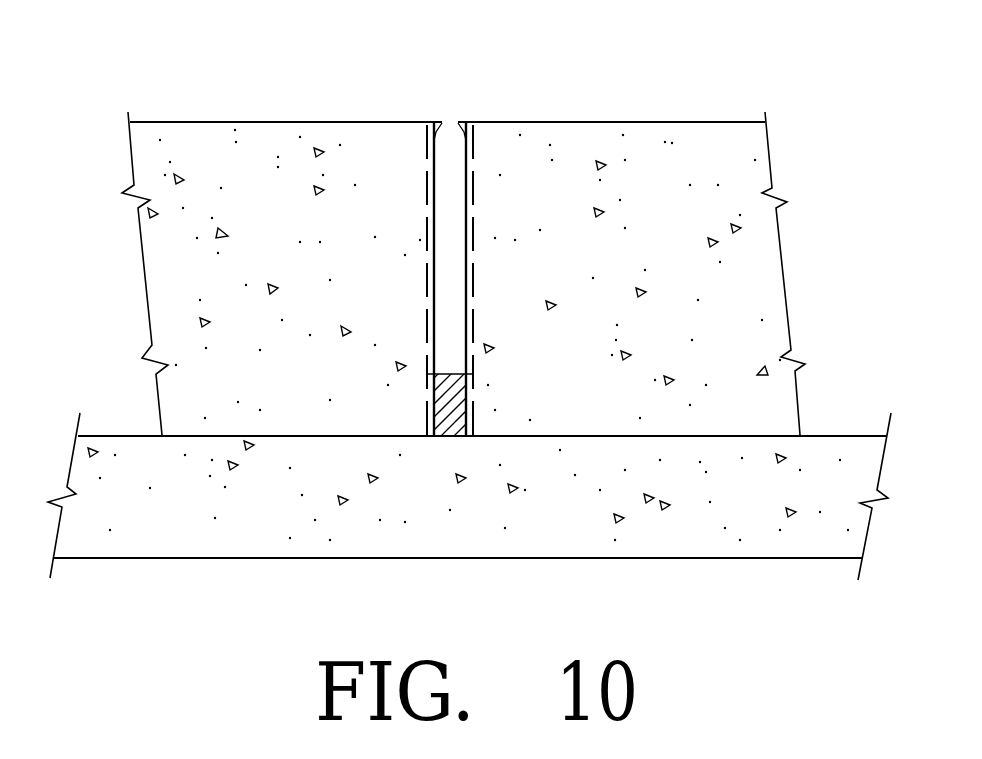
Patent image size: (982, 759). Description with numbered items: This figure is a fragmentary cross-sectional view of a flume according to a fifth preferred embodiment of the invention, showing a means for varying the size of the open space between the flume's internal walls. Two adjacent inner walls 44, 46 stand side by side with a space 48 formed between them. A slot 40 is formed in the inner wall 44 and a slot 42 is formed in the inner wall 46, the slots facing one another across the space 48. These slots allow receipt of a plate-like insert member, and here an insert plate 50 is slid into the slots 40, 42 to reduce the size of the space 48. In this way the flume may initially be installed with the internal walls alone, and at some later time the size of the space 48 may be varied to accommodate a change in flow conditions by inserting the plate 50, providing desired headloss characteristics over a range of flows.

The inner wall 46 is at (218, 122).
The inner wall 44 is at (632, 122).
The slot 42 is at (438, 107).
The slot 40 is at (462, 108).
The space 48 is at (478, 277).
The insert plate 50 is at (433, 402).